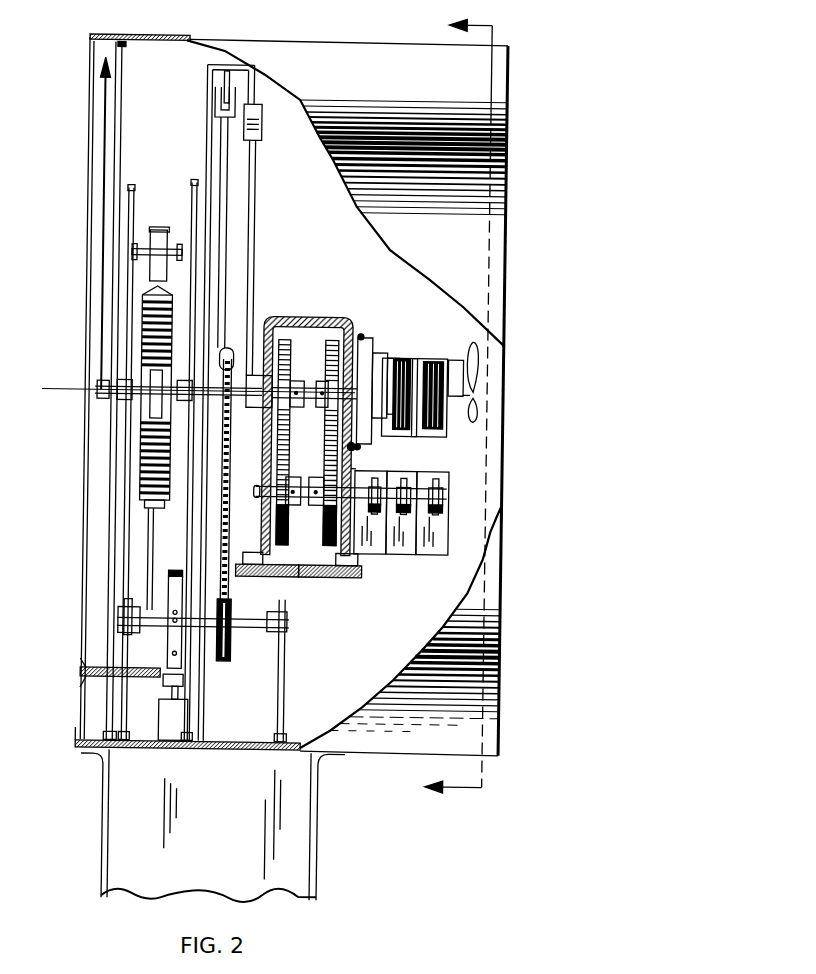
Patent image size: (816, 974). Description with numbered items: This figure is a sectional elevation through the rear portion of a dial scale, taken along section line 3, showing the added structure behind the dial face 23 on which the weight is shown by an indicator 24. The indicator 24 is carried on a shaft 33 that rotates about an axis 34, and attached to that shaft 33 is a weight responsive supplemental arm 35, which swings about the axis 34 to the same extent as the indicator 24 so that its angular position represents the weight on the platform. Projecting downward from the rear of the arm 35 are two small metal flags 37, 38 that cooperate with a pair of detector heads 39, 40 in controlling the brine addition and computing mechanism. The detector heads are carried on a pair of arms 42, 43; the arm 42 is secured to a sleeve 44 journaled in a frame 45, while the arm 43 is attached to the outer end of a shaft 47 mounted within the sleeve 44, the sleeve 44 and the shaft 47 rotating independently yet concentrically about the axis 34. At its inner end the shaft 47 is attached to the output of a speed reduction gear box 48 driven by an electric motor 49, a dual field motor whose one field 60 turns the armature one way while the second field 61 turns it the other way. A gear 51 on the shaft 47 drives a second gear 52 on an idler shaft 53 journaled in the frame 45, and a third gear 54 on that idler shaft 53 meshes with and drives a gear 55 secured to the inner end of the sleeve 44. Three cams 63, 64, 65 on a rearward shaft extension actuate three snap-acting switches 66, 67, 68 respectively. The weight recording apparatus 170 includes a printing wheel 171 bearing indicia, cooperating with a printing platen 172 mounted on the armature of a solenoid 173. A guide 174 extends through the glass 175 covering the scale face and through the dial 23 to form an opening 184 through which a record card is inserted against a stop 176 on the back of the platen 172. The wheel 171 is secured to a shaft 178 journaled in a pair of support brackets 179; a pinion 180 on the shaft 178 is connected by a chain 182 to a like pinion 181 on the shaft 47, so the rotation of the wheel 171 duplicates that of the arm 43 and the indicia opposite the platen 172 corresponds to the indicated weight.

The section line 3- 3 is at (469, 408).
The dial face 23 is at (88, 442).
The indicator 24 is at (100, 155).
The shaft 33 is at (141, 402).
The axis 34 is at (86, 392).
The supplemental arm 35 is at (199, 108).
The metal flag 37 is at (256, 71).
The metal flag 38 is at (227, 78).
The detector head 39 is at (258, 108).
The detector head 40 is at (211, 93).
The arm 42 is at (254, 154).
The arm 43 is at (217, 151).
The sleeve 44 is at (256, 411).
The frame 45 is at (332, 340).
The shaft 47 is at (307, 380).
The speed reduction gear box 48 is at (363, 366).
The electric motor 49 is at (416, 368).
The gear 51 is at (345, 330).
The second gear 52 is at (331, 548).
The idler shaft 53 is at (258, 494).
The third gear 54 is at (284, 548).
The gear 55 is at (285, 340).
The field 60 is at (447, 430).
The second field 61 is at (399, 368).
The cam 63 is at (438, 478).
The cam 64 is at (407, 478).
The cam 65 is at (377, 478).
The snap-acting switch 66 is at (443, 546).
The snap-acting switch 67 is at (410, 546).
The snap-acting switch 68 is at (378, 541).
The weight recording apparatus 170 is at (192, 701).
The printing wheel 171 is at (177, 572).
The printing platen 172 is at (187, 671).
The solenoid 173 is at (178, 723).
The guide 174 is at (103, 672).
The glass 175 is at (85, 521).
The stop 176 is at (189, 672).
The shaft 178 is at (254, 633).
The support brackets 179 is at (296, 755).
The pinion 180 is at (242, 612).
The pinion 181 is at (220, 425).
The chain 182 is at (223, 483).
The opening 184 is at (84, 676).